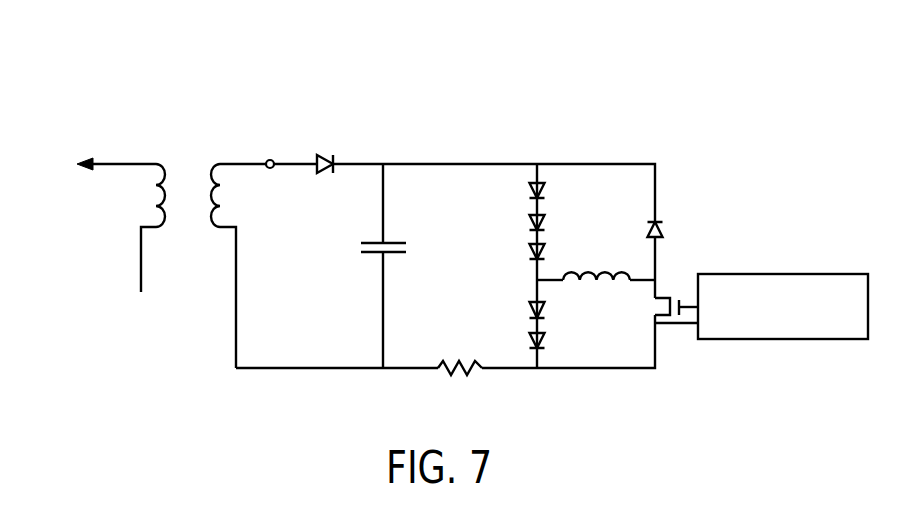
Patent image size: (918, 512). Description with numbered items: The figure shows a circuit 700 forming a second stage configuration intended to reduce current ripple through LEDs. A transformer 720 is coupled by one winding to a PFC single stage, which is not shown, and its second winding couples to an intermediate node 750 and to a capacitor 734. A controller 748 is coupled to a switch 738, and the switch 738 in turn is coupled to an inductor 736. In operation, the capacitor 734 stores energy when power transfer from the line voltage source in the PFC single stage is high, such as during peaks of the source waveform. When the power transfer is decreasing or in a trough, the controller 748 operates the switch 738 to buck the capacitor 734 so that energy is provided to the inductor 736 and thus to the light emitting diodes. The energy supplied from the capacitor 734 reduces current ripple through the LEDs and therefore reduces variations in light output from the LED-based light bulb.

The circuit 700 is at (80, 85).
The transformer 720 is at (218, 163).
The intermediate node 750 is at (272, 159).
The capacitor 734 is at (393, 242).
The inductor 736 is at (569, 276).
The switch 738 is at (663, 297).
The controller 748 is at (784, 273).